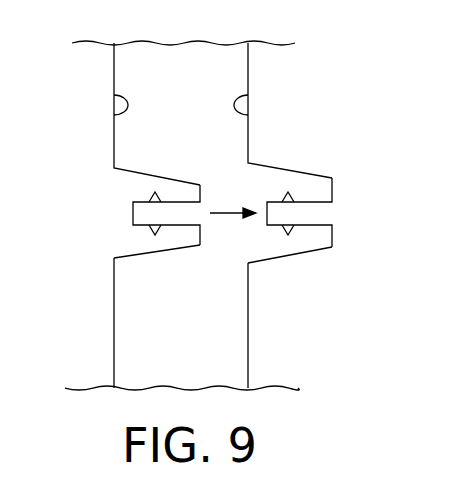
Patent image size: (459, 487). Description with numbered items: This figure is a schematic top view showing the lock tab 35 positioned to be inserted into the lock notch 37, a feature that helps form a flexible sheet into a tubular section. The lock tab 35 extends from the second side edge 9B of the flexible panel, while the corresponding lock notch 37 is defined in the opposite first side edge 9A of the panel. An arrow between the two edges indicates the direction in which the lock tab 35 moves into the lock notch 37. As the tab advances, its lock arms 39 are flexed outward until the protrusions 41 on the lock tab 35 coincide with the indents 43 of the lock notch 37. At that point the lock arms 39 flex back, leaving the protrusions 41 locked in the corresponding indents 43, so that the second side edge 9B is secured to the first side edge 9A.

The first side edge 9A is at (248, 113).
The second side edge 9B is at (113, 110).
The lock tab 35 is at (134, 175).
The lock notch 37 is at (297, 255).
The lock arms 39 is at (150, 257).
The protrusions 41 is at (154, 233).
The indents 43 is at (290, 206).